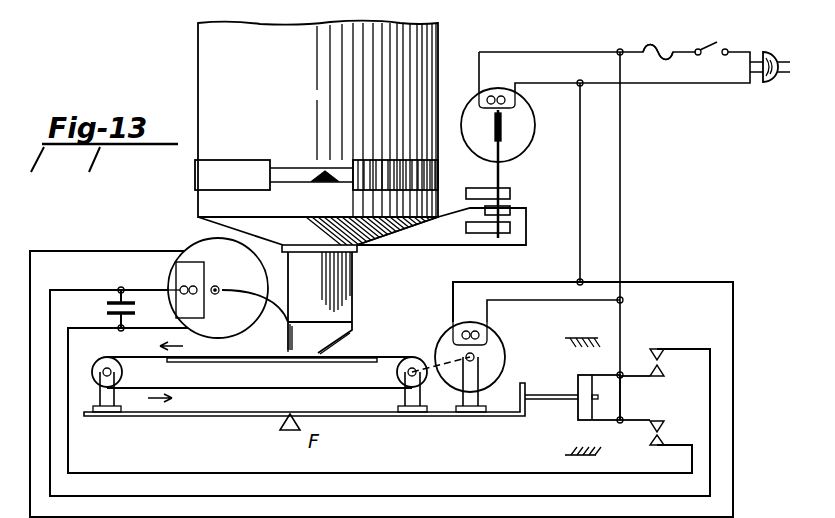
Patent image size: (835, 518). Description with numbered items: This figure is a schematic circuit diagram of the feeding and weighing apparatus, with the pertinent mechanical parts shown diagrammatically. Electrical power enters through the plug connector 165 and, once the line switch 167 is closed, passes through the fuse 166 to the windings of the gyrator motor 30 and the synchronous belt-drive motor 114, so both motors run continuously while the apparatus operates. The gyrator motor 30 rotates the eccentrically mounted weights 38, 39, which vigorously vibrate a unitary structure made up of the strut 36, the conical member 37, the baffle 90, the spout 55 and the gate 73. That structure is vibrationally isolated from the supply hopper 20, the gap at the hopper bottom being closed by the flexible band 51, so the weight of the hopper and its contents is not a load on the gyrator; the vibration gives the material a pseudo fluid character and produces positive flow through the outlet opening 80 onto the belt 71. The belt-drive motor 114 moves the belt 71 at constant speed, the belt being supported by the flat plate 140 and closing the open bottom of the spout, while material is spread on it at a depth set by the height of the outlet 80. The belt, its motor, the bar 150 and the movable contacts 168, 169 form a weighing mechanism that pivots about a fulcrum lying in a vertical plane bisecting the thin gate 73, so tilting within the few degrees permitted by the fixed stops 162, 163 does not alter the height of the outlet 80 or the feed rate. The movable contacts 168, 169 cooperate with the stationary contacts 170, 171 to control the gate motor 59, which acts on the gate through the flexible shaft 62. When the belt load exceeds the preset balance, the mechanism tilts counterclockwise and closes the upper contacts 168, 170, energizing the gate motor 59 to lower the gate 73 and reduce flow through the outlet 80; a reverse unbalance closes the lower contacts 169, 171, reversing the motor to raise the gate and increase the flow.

The supply hopper 20 is at (440, 42).
The flexible band 51 is at (195, 178).
The baffle 90 is at (313, 168).
The conical member 37 is at (374, 241).
The downspout 55 is at (355, 295).
The gate 73 is at (292, 322).
The outlet opening 80 is at (288, 350).
The gate motor 59 is at (190, 243).
The flexible shaft 62 is at (278, 313).
The gyrator motor 30 is at (524, 147).
The eccentrically mounted weight 38 is at (512, 193).
The eccentrically mounted weight 39 is at (477, 233).
The strut 36 is at (490, 240).
The belt 71 is at (121, 356).
The flat plate 140 is at (208, 362).
The synchronous belt-drive motor 114 is at (443, 338).
The bar 150 is at (552, 391).
The fixed stop 163 is at (580, 336).
The fixed stop 162 is at (570, 451).
The stationary contact 170 is at (678, 348).
The movable contact 168 is at (645, 377).
The movable contact 169 is at (637, 421).
The stationary contact 171 is at (676, 446).
The fuse 166 is at (666, 50).
The line switch 167 is at (714, 41).
The plug connector 165 is at (776, 50).